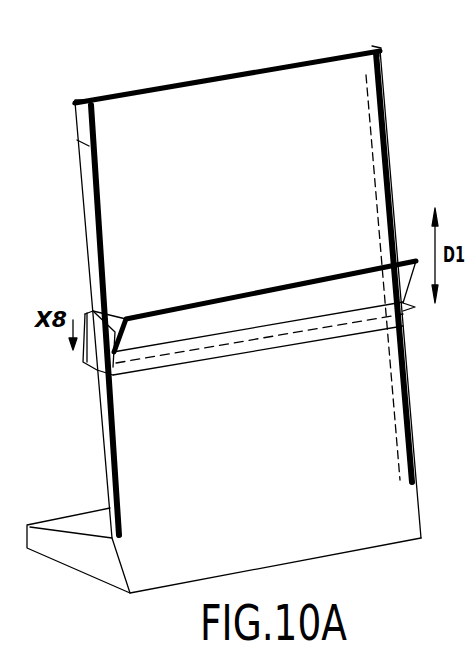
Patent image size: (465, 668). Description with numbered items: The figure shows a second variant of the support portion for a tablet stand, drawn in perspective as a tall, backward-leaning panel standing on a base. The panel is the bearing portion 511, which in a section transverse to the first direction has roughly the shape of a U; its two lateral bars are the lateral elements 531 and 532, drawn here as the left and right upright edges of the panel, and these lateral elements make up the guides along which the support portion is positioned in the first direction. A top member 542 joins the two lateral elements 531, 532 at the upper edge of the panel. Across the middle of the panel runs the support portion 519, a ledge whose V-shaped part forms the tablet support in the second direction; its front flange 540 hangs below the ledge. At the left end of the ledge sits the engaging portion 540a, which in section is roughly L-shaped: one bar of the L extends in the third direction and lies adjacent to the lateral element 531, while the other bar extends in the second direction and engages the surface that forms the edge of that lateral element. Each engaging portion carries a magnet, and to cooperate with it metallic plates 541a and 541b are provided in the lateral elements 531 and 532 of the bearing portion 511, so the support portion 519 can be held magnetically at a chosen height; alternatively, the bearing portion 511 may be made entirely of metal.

The bearing portion 511 is at (162, 123).
The support portion 519 is at (250, 308).
The lateral element 531 is at (78, 112).
The lateral element 532 is at (371, 46).
The shelf front flange 540 is at (172, 360).
The engaging portion 540a is at (108, 337).
The metallic plate 541a is at (86, 151).
The metallic plate 541b is at (386, 124).
The top frame member 542 is at (265, 72).